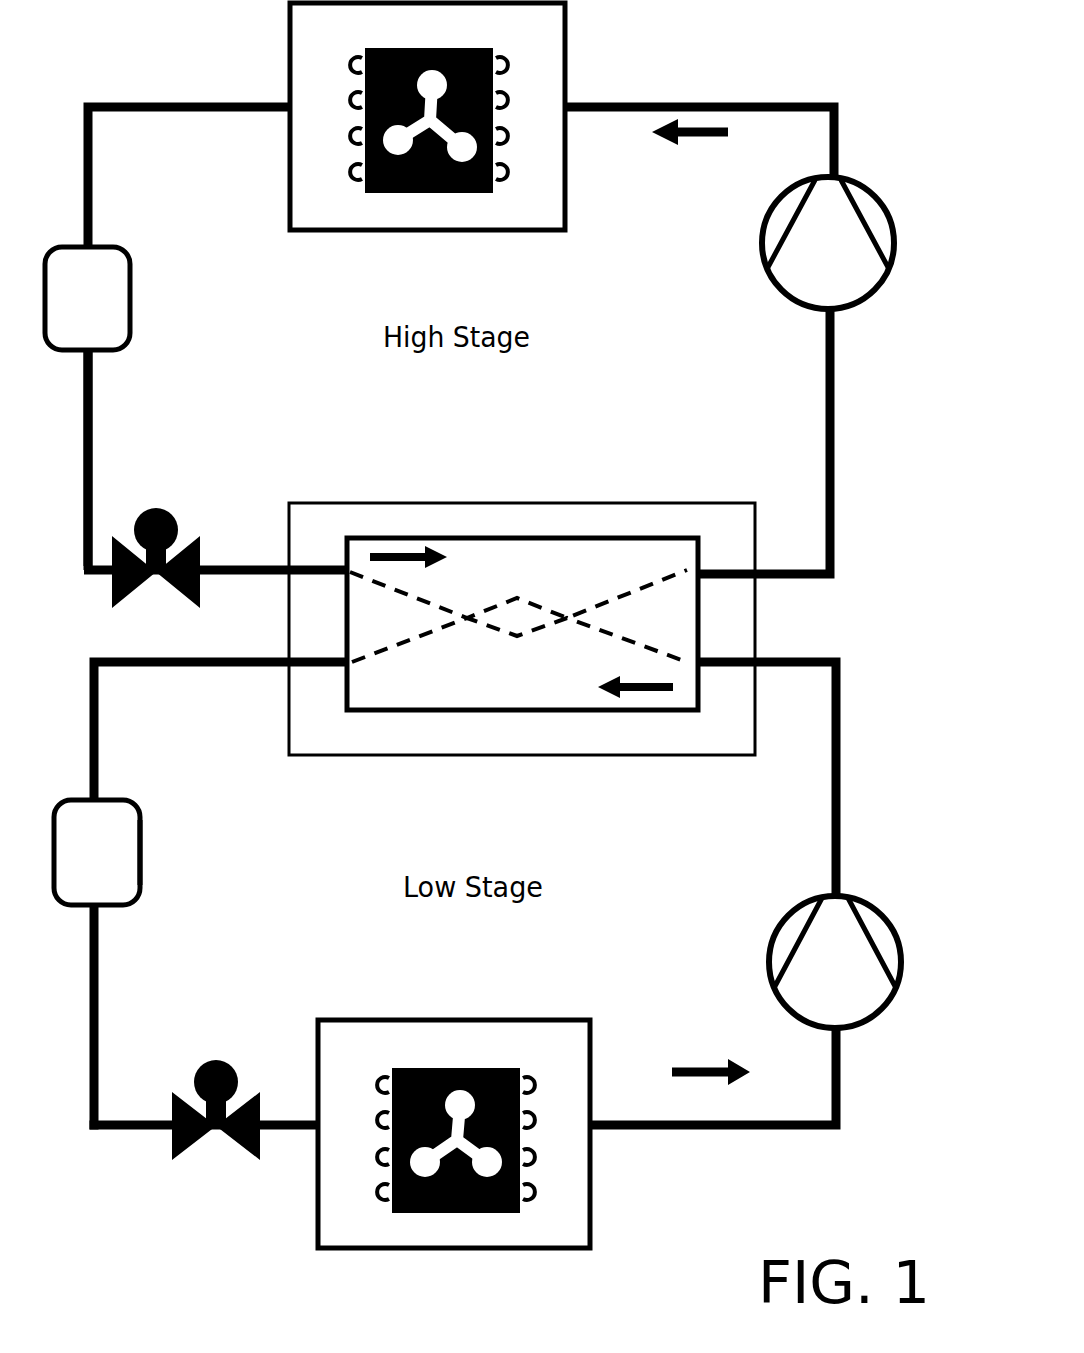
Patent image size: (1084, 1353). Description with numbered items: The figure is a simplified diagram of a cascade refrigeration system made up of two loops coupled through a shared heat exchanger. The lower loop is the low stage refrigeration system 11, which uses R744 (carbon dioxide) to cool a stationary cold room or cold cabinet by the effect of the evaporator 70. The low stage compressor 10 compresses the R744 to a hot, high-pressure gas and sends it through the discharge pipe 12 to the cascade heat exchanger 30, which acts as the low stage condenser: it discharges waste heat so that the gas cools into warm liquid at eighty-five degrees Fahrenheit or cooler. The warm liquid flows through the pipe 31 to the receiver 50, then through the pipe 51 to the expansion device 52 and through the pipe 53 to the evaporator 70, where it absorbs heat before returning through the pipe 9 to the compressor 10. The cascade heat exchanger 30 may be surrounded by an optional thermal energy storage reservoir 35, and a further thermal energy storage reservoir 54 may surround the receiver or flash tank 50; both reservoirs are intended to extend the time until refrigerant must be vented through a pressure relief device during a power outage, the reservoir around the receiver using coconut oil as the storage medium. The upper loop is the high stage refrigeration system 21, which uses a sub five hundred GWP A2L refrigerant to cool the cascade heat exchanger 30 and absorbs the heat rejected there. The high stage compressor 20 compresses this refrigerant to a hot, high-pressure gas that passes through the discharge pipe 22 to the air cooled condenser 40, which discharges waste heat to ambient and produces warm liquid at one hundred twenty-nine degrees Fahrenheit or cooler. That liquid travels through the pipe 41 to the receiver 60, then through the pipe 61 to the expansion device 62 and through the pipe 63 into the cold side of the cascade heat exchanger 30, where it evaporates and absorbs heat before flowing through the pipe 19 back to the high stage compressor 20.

The pipe 9 is at (775, 1130).
The low stage compressor 10 is at (897, 928).
The low stage refrigeration system 11 is at (883, 693).
The discharge pipe 12 is at (840, 760).
The pipe 19 is at (834, 355).
The high stage compressor 20 is at (893, 215).
The high stage refrigeration system 21 is at (892, 107).
The discharge pipe 22 is at (803, 103).
The cascade heat exchanger 30 is at (522, 624).
The pipe 31 is at (90, 745).
The thermal energy storage reservoir 35 is at (288, 706).
The air cooled condenser 40 is at (456, 232).
The pipe 41 is at (210, 103).
The receiver 50 is at (123, 810).
The pipe 51 is at (90, 977).
The expansion device 52 is at (223, 1064).
The pipe 53 is at (300, 1132).
The thermal energy storage reservoir 54 is at (142, 842).
The receiver 60 is at (112, 254).
The pipe 61 is at (84, 402).
The expansion device 62 is at (200, 549).
The pipe 63 is at (228, 575).
The evaporator 70 is at (485, 1253).